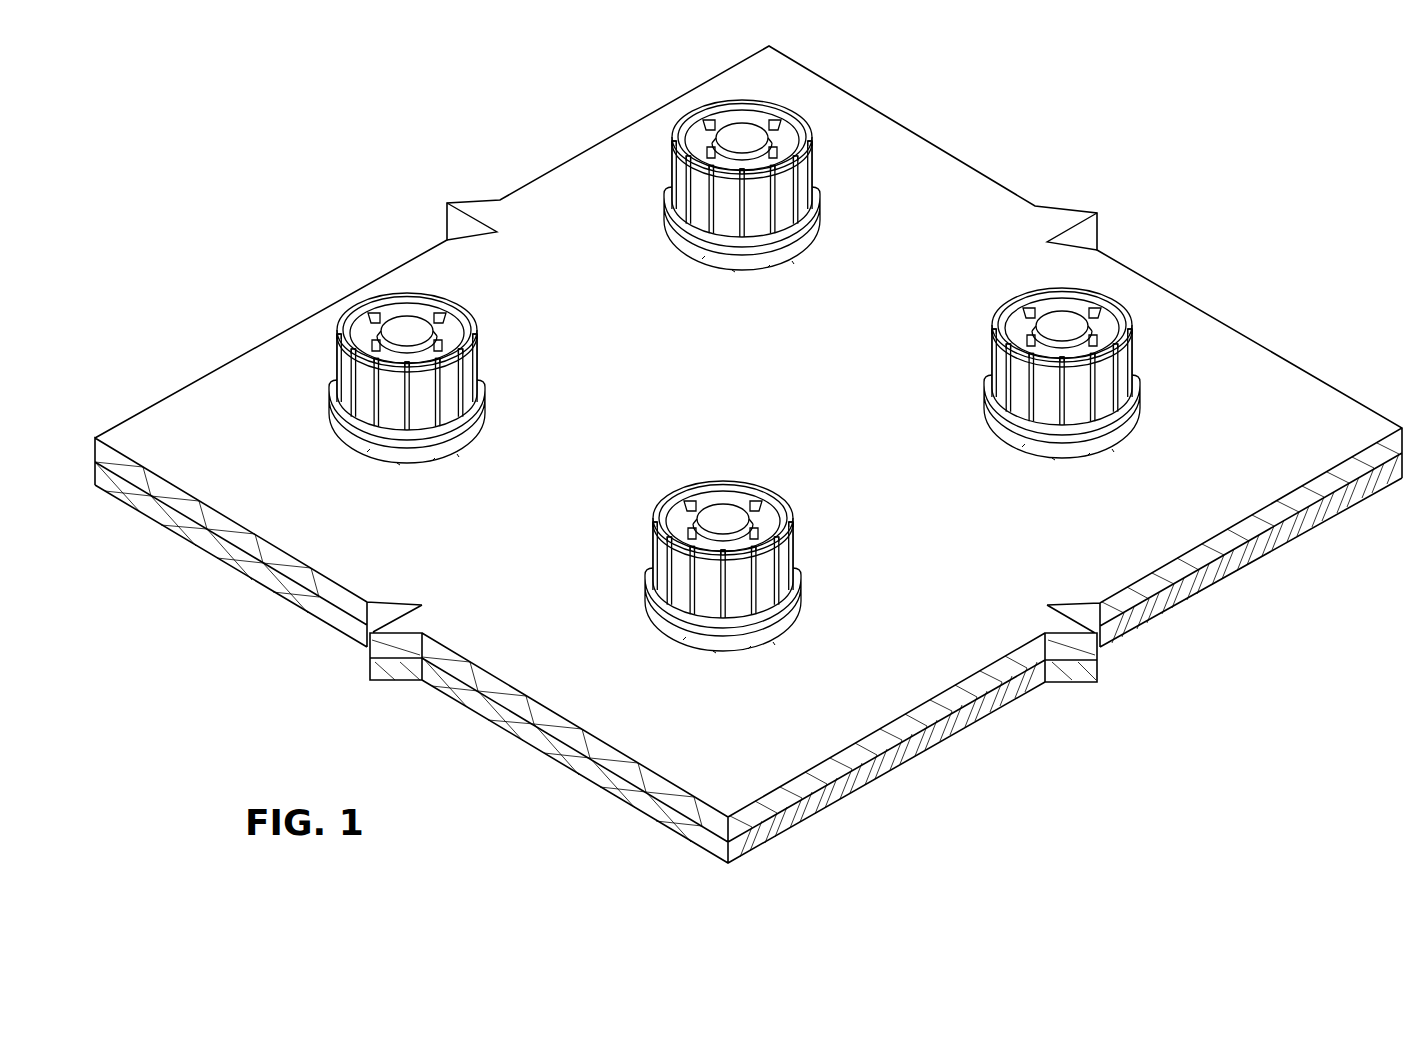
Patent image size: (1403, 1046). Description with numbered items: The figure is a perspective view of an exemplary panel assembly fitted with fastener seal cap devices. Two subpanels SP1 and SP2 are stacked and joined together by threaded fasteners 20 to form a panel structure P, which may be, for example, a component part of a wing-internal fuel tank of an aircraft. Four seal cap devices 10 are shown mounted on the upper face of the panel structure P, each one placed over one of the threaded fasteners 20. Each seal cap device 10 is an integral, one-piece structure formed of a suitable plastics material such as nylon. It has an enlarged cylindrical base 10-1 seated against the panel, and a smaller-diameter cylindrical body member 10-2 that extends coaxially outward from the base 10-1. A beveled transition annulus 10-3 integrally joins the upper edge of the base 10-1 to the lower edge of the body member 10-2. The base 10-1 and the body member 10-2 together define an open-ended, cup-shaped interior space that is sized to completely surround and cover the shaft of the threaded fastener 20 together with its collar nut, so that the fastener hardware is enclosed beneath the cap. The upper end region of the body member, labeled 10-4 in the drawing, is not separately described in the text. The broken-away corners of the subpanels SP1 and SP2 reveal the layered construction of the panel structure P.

The seal cap device 10 is at (718, 377).
The cylindrical base 10-1 is at (737, 265).
The cylindrical body member 10-2 is at (707, 210).
The beveled transition annulus 10-3 is at (790, 239).
The top rim 10-4 is at (690, 141).
The threaded fastener 20 is at (739, 136).
The panel structure P is at (748, 464).
The subpanel SP1 is at (965, 662).
The subpanel SP2 is at (495, 690).